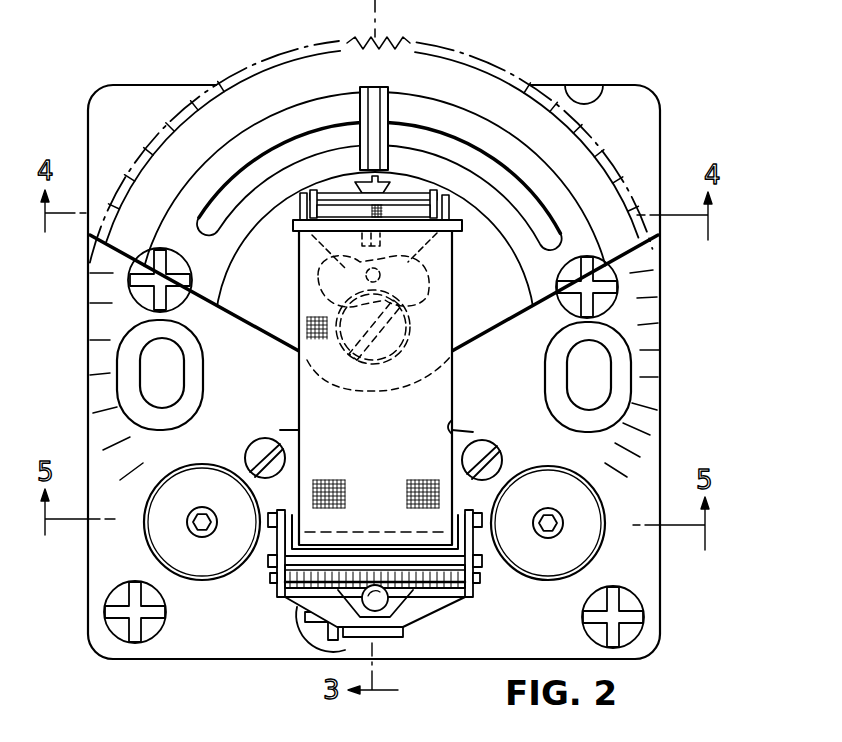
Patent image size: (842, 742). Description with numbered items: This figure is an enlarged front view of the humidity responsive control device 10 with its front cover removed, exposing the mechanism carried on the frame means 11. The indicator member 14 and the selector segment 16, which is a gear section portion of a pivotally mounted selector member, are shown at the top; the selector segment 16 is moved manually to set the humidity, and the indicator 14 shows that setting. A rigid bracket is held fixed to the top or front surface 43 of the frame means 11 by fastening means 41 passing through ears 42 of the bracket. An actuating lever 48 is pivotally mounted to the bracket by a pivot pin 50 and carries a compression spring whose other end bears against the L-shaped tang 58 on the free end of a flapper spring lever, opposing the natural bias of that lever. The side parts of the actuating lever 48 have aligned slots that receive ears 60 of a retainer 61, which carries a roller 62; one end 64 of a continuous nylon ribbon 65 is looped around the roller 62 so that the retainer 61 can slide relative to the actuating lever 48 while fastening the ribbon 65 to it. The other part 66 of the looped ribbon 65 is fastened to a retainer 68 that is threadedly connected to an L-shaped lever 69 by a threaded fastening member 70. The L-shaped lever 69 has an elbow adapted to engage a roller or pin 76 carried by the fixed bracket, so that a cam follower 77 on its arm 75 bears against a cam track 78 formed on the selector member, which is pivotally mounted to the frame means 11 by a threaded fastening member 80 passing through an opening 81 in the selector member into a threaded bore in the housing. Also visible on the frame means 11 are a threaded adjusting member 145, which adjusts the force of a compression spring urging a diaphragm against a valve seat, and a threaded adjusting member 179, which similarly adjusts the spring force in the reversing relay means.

The humidity responsive control device 10 is at (702, 118).
The frame means 11 is at (640, 575).
The indicator member 14 is at (377, 98).
The selector segment 16 is at (300, 48).
The fastening means 41 is at (253, 452).
The ears 42 is at (283, 430).
The top or front surface 43 is at (103, 558).
The actuating lever 48 is at (297, 598).
The pivot pin 50 is at (272, 517).
The L-shaped tang 58 is at (352, 598).
The ears 60 is at (275, 563).
The retainer 61 is at (428, 568).
The roller 62 is at (372, 532).
The end of ribbon 64 is at (440, 517).
The continuous nylon ribbon 65 is at (425, 388).
The part of looped ribbon 66 is at (443, 248).
The retainer 68 is at (457, 207).
The L-shaped lever 69 is at (416, 190).
The threaded fastening member 70 is at (299, 253).
The arm 75 is at (453, 276).
The roller or pin 76 is at (337, 205).
The cam follower 77 is at (299, 292).
The cam track 78 is at (453, 299).
The threaded fastening member 80 is at (299, 348).
The opening 81 is at (299, 372).
The threaded adjusting member 145 is at (562, 528).
The threaded adjusting member 179 is at (200, 508).